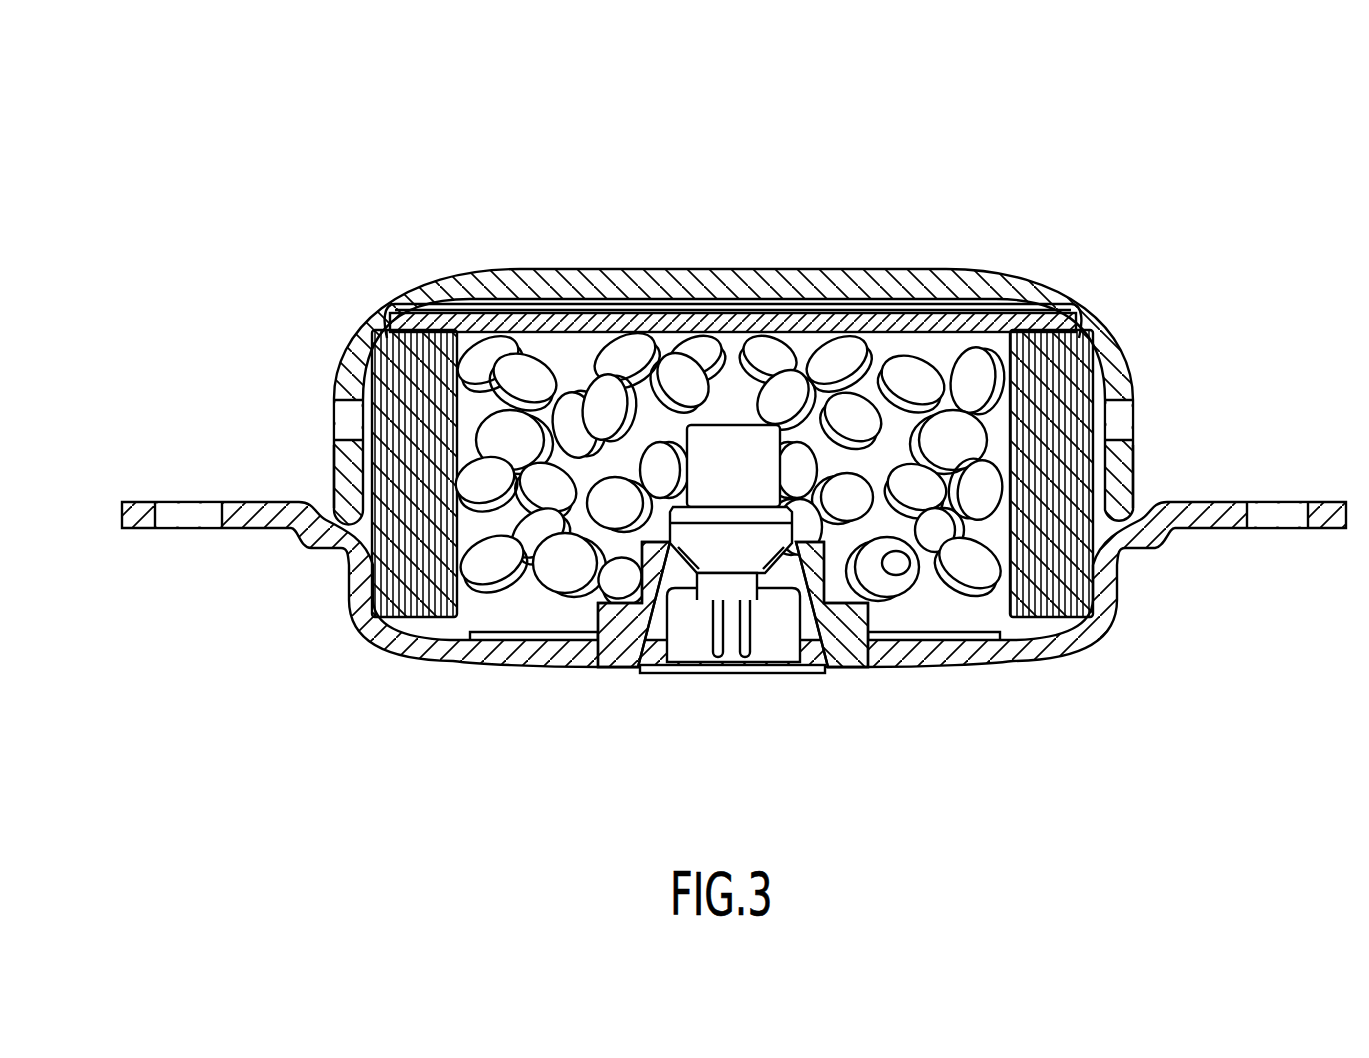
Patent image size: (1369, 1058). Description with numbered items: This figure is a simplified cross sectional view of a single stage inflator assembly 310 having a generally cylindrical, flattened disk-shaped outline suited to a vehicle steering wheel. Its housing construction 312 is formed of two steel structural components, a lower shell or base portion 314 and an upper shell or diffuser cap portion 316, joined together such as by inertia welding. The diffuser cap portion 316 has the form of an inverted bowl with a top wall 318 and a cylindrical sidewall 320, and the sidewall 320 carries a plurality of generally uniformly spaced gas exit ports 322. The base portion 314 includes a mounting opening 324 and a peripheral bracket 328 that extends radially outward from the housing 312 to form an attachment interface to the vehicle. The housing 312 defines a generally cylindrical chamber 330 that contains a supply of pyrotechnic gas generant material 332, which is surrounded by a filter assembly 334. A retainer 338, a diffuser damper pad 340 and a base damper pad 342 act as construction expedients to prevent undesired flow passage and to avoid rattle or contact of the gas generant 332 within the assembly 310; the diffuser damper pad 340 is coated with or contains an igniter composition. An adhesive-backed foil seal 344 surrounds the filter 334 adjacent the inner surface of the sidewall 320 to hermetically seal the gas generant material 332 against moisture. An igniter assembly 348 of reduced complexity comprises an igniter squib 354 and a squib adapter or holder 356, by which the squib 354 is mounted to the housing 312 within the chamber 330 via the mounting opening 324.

The inflator assembly 310 is at (734, 481).
The housing construction 312 is at (715, 356).
The lower shell or base portion 314 is at (734, 637).
The upper shell or diffuser cap portion 316 is at (540, 292).
The top wall 318 is at (790, 268).
The cylindrical sidewall 320 is at (345, 478).
The gas exit ports 322 is at (337, 412).
The mounting opening 324 is at (843, 660).
The peripheral bracket 328 is at (254, 529).
The chamber 330 is at (990, 610).
The gas generant material 332 is at (897, 583).
The filter assembly 334 is at (380, 592).
The retainer 338 is at (960, 310).
The diffuser damper pad 340 is at (640, 335).
The base damper pad 342 is at (487, 634).
The adhesive-backed foil seal 344 is at (362, 425).
The igniter assembly 348 is at (790, 666).
The igniter device or squib 354 is at (738, 558).
The squib adapter or holder 356 is at (818, 633).